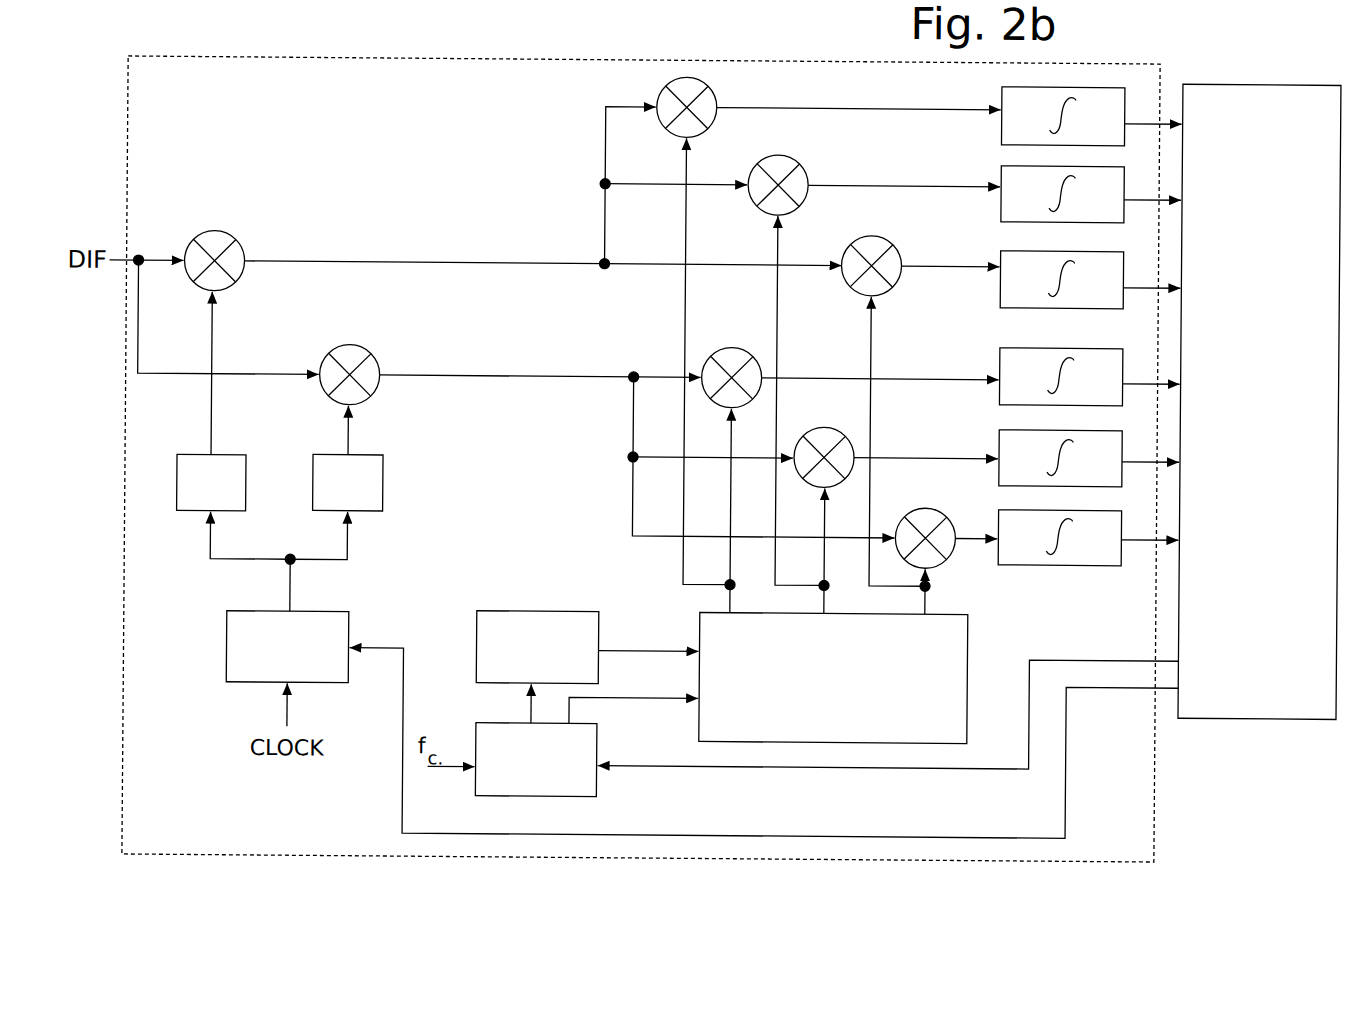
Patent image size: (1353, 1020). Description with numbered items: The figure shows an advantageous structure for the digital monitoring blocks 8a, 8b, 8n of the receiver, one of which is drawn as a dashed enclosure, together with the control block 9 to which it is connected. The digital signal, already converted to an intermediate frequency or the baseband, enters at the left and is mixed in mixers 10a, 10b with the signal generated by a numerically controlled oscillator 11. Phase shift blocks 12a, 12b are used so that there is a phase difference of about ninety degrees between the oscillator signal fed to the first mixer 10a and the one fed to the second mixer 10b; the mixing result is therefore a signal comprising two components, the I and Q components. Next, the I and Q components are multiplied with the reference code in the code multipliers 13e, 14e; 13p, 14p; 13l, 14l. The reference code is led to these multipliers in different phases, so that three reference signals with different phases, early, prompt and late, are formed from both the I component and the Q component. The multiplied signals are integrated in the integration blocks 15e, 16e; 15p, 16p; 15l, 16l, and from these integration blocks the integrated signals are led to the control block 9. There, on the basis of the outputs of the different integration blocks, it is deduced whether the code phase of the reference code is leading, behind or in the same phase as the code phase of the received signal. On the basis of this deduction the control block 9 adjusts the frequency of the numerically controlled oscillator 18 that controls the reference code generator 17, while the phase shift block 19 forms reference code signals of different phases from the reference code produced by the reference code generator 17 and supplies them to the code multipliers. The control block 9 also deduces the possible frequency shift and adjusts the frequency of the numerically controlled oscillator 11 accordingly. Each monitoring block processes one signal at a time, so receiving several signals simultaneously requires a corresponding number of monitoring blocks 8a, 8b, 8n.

The digital monitoring block 8a is at (704, 459).
The digital monitoring block 8b is at (704, 459).
The digital monitoring block 8n is at (1157, 738).
The control block 9 is at (1258, 714).
The first mixer 10a is at (224, 240).
The second mixer 10b is at (371, 357).
The numerically controlled oscillator 11 is at (228, 650).
The phase shift block 12a is at (185, 514).
The phase shift block 12b is at (383, 500).
The code multiplier 13e is at (666, 95).
The code multiplier 13p is at (800, 165).
The code multiplier 13l is at (893, 248).
The code multiplier 14e is at (709, 356).
The code multiplier 14p is at (800, 432).
The code multiplier 14l is at (920, 508).
The integration block 15e is at (999, 96).
The integration block 15p is at (999, 172).
The integration block 15l is at (999, 298).
The integration block 16e is at (999, 367).
The integration block 16p is at (999, 445).
The integration block 16l is at (1093, 562).
The reference code generator 17 is at (522, 612).
The numerically controlled oscillator 18 is at (599, 785).
The phase shift block 19 is at (969, 628).